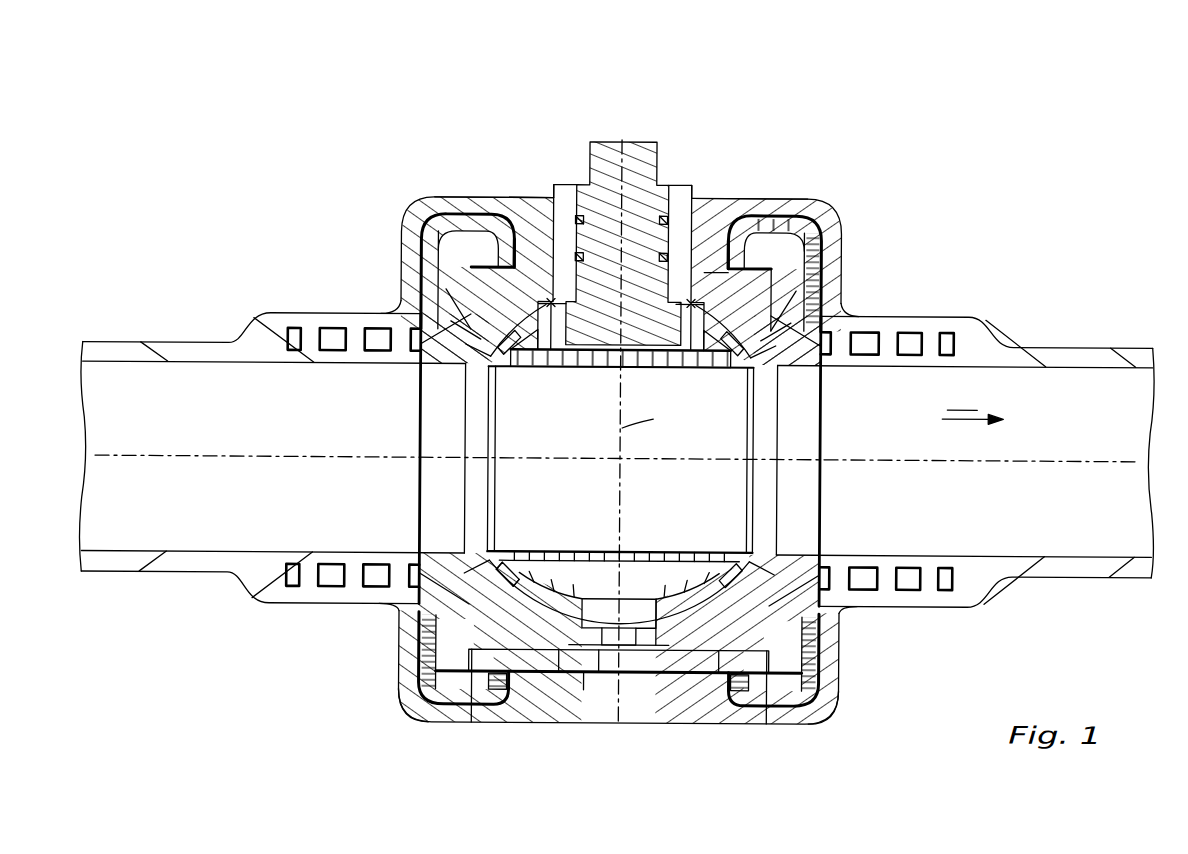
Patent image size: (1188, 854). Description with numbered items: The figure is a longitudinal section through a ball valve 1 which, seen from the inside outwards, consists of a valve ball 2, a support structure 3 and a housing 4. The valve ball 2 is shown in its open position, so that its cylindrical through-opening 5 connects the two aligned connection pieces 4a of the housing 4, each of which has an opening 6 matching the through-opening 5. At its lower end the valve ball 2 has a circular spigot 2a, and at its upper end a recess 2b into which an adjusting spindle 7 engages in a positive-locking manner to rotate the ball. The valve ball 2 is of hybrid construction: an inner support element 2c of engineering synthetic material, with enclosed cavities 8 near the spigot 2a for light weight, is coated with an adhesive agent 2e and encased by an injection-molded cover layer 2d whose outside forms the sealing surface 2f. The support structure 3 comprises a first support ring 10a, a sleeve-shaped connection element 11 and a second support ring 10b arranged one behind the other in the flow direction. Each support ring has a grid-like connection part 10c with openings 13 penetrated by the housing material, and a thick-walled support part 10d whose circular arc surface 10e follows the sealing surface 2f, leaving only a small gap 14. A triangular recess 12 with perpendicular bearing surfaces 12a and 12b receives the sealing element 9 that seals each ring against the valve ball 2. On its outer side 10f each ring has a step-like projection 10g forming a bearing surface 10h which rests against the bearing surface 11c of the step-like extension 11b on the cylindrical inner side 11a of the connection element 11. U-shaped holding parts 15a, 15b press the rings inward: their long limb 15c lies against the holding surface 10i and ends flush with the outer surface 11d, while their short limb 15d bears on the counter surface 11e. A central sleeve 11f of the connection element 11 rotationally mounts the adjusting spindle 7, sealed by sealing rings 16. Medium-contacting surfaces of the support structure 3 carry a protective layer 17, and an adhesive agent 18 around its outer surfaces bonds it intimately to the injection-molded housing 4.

The ball valve 1 is at (462, 81).
The valve ball 2 is at (535, 690).
The spigot 2a is at (583, 582).
The recess 2b is at (720, 198).
The support element 2c is at (680, 700).
The cover layer 2d is at (720, 700).
The adhesive agent 2e is at (645, 700).
The sealing surface 2f is at (838, 262).
The support structure 3 is at (477, 198).
The housing 4 is at (805, 198).
The connection pieces 4a is at (113, 355).
The through-opening 5 is at (686, 507).
The opening 6 is at (135, 413).
The adjusting spindle 7 is at (595, 150).
The cavities 8 is at (557, 592).
The sealing element 9 is at (412, 292).
The first support ring 10a is at (412, 210).
The second support ring 10b is at (840, 232).
The connection part 10c is at (292, 330).
The support part 10d is at (420, 318).
The circular arc surface 10e is at (410, 250).
The outer side 10f is at (513, 198).
The projection 10g is at (450, 662).
The bearing surface 10h is at (450, 682).
The holding surface 10i is at (470, 648).
The connection element 11 is at (603, 655).
The inner side 11a is at (828, 622).
The step-like extension 11b is at (420, 705).
The bearing surface 11c is at (447, 210).
The outer surface 11d is at (600, 700).
The counter surface 11e is at (472, 700).
The sleeve 11f is at (668, 198).
The recess 12 is at (490, 592).
The bearing surface 12a is at (492, 582).
The bearing surface 12b is at (508, 592).
The openings 13 is at (315, 330).
The gap 14 is at (538, 198).
The holding part 15a is at (430, 210).
The holding part 15b is at (828, 198).
The long limb 15c is at (840, 240).
The short limb 15d is at (740, 198).
The sealing rings 16 is at (652, 195).
The protective layer 17 is at (795, 375).
The adhesive agent 18 is at (435, 718).